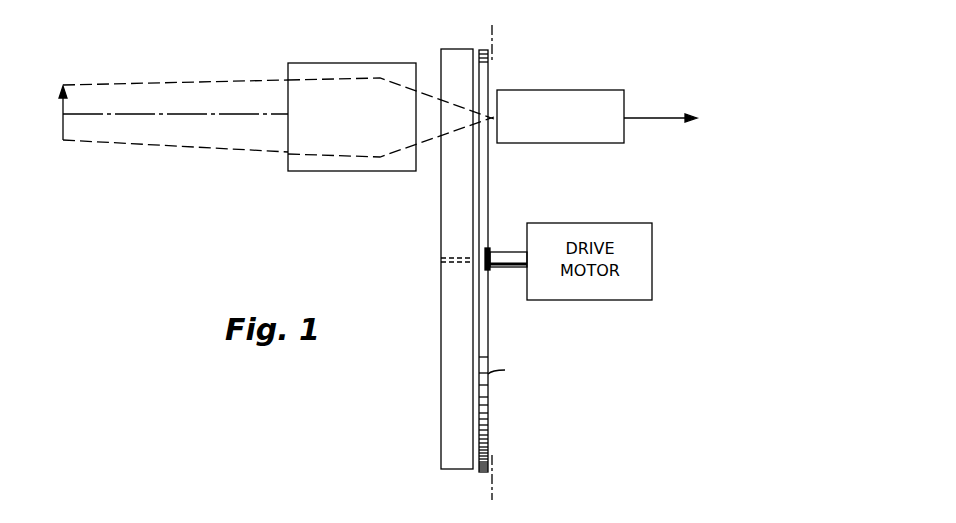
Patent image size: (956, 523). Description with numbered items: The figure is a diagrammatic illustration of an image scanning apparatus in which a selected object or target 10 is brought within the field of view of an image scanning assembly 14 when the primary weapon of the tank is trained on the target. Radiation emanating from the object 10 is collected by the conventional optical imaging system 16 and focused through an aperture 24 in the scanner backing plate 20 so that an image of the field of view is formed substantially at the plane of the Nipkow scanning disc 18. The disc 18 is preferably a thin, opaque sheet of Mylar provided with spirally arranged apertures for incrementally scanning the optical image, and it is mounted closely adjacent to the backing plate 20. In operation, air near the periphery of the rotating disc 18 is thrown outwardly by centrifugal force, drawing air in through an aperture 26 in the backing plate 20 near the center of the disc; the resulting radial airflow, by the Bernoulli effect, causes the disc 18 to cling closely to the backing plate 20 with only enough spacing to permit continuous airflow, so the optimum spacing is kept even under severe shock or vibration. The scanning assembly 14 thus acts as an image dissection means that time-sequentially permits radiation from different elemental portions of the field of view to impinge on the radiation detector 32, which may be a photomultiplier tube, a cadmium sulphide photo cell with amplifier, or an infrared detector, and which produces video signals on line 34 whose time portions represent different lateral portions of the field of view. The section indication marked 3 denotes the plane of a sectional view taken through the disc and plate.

The object or target 10 is at (66, 100).
The image scanning assembly 14 is at (632, 33).
The optical imaging system 16 is at (378, 63).
The Nipkow scanning disc 18 is at (488, 343).
The scanner backing plate 20 is at (457, 49).
The aperture 24 is at (440, 140).
The aperture 26 is at (441, 259).
The radiation detector 32 is at (580, 90).
The line 34 is at (650, 118).
The section line 3- 3 is at (500, 25).